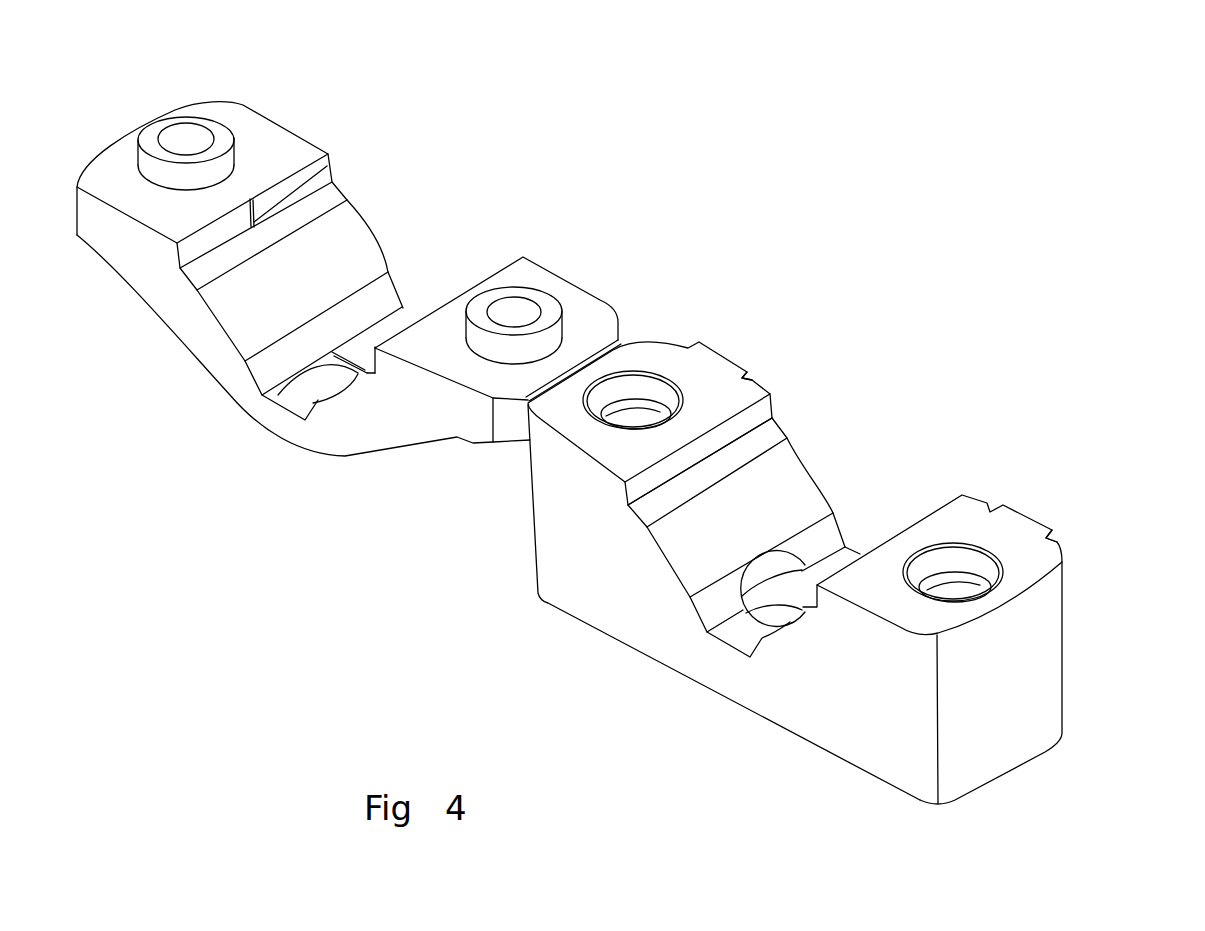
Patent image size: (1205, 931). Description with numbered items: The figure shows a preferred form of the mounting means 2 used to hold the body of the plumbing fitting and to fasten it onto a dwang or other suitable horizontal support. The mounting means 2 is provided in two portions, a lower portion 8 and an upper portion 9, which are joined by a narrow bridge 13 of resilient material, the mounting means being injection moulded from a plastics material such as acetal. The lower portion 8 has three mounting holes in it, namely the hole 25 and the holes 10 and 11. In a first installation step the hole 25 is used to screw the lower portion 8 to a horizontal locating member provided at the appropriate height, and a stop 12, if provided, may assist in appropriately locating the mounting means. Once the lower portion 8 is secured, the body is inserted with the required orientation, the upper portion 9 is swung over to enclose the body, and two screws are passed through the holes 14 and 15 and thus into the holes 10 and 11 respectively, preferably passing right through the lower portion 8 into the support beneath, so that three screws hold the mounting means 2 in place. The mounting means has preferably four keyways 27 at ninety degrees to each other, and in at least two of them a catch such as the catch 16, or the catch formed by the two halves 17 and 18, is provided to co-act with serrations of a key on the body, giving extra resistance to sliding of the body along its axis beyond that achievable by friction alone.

The mounting means 2 is at (791, 181).
The lower portion 8 is at (994, 457).
The upper portion 9 is at (433, 255).
The hole 10 is at (626, 418).
The hole 11 is at (958, 593).
The stop 12 is at (752, 370).
The narrow bridge 13 is at (618, 348).
The hole 14 is at (513, 313).
The hole 15 is at (193, 137).
The catch 16 is at (303, 418).
The catch half 17 is at (883, 538).
The catch half 18 is at (328, 155).
The hole 25 is at (772, 614).
The keyway 27 is at (203, 267).